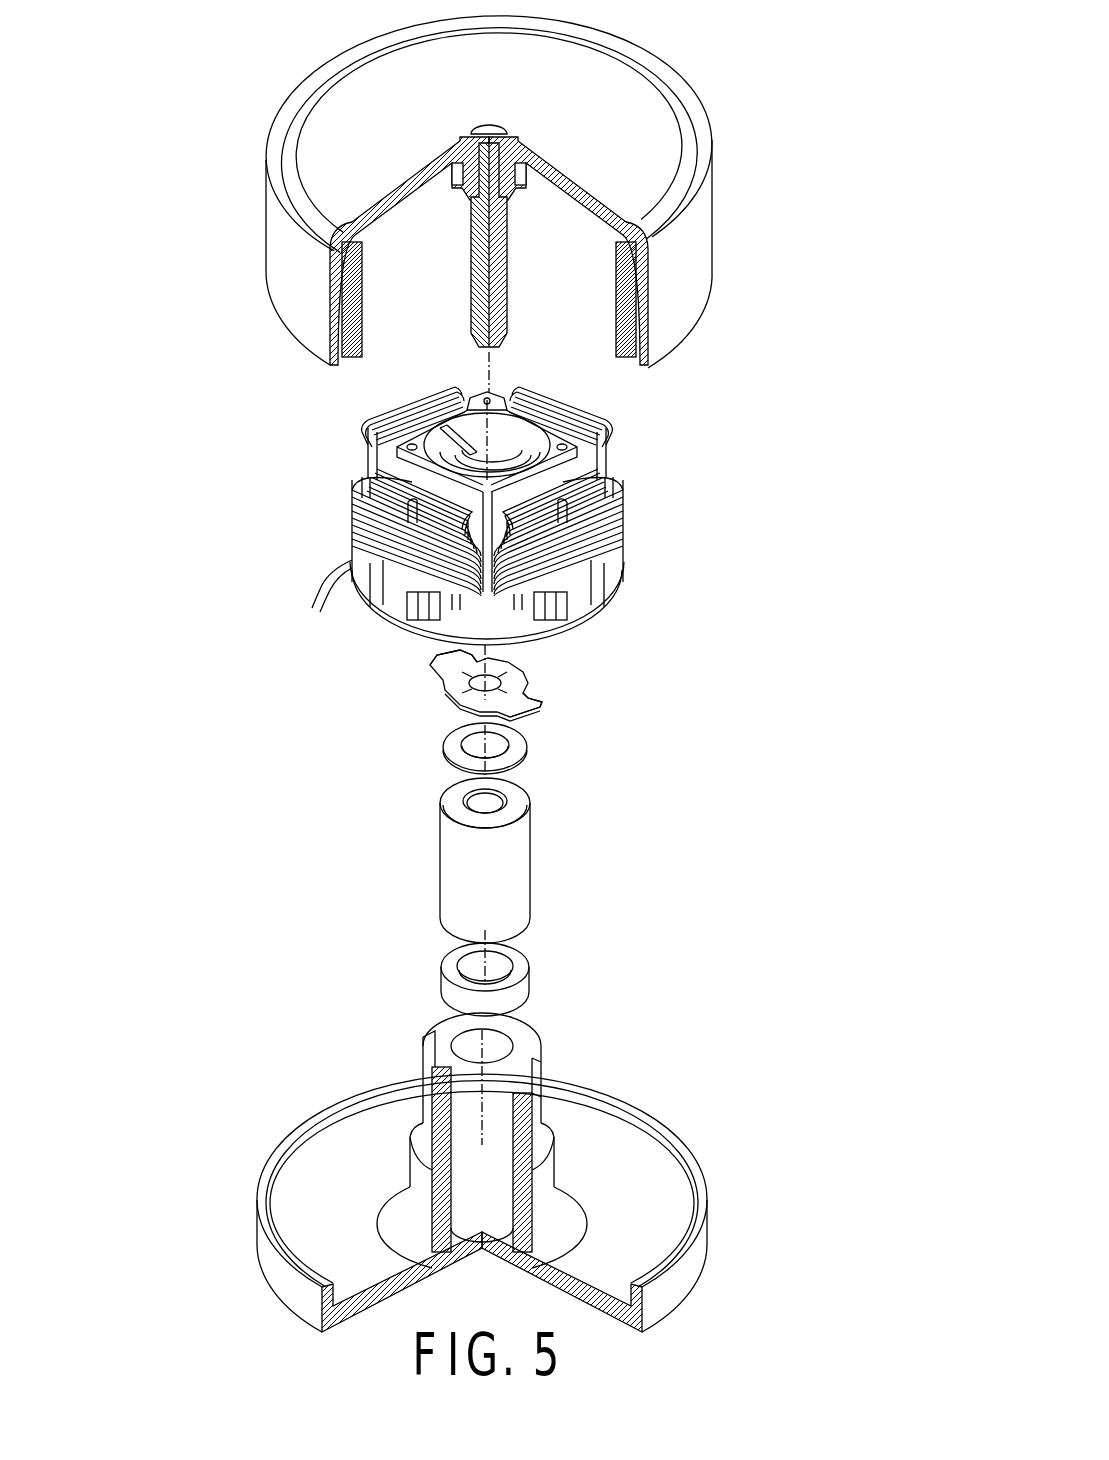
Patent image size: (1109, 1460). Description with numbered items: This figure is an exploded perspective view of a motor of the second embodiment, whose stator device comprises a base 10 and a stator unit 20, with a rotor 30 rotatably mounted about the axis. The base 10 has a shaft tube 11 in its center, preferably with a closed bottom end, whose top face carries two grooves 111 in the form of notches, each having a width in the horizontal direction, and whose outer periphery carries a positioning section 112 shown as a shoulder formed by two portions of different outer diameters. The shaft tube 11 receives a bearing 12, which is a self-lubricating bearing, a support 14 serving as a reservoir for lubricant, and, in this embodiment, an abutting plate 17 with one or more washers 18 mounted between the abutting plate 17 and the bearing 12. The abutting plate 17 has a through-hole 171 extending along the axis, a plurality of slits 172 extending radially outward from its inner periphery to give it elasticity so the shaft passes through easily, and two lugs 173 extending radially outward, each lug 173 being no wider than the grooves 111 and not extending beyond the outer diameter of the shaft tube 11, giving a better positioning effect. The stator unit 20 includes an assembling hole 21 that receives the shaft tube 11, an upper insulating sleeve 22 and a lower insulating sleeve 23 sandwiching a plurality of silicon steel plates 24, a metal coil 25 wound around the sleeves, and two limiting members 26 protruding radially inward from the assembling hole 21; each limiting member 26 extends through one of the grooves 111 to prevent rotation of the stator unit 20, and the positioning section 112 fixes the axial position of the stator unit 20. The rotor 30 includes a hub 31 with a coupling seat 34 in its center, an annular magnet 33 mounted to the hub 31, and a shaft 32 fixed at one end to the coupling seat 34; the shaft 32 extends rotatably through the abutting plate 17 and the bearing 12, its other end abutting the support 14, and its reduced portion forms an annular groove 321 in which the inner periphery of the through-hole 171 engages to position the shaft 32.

The base 10 is at (529, 1141).
The shaft tube 11 is at (470, 1101).
The groove 111 is at (450, 1038).
The positioning section 112 is at (545, 1133).
The bearing 12 is at (517, 870).
The support 14 is at (520, 986).
The abutting plate 17 is at (453, 699).
The through-hole 171 is at (440, 656).
The slits 172 is at (463, 688).
The lug 173 is at (428, 672).
The washer 18 is at (447, 748).
The stator unit 20 is at (490, 486).
The assembling hole 21 is at (502, 440).
The upper insulating sleeve 22 is at (577, 438).
The lower insulating sleeve 23 is at (583, 596).
The silicon steel plates 24 is at (607, 537).
The metal coil 25 is at (388, 435).
The limiting member 26 is at (463, 440).
The rotor 30 is at (534, 217).
The hub 31 is at (632, 88).
The shaft 32 is at (612, 355).
The annular groove 321 is at (505, 207).
The annular magnet 33 is at (648, 347).
The coupling seat 34 is at (460, 178).